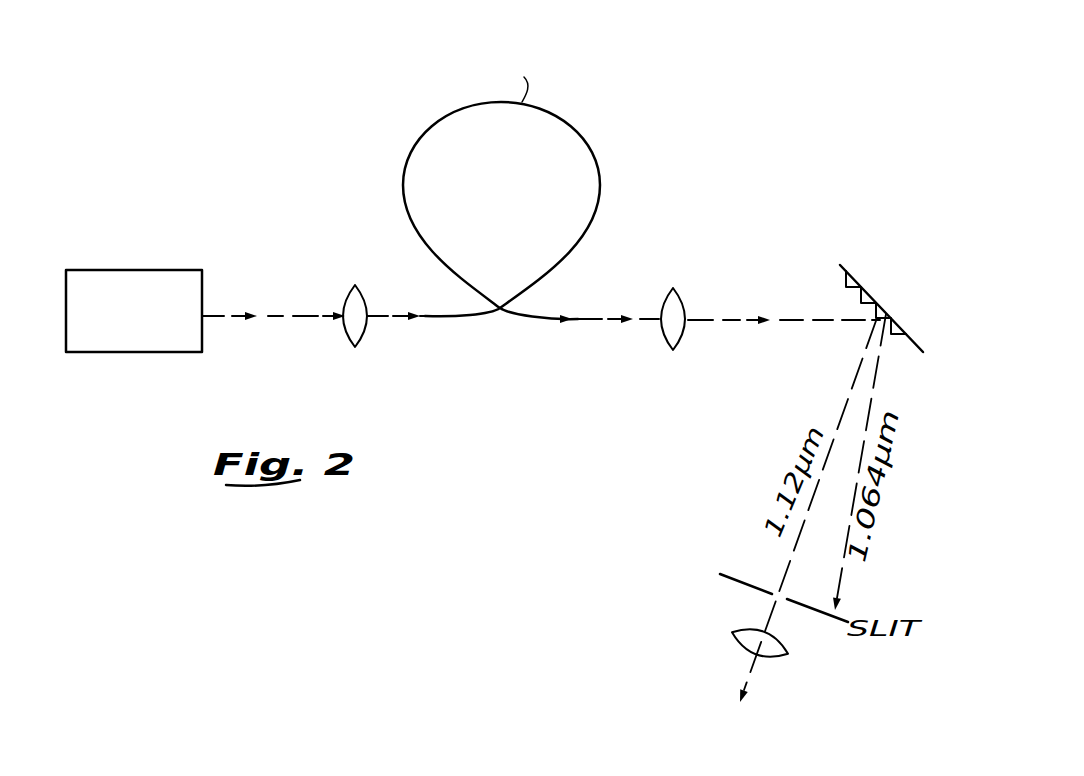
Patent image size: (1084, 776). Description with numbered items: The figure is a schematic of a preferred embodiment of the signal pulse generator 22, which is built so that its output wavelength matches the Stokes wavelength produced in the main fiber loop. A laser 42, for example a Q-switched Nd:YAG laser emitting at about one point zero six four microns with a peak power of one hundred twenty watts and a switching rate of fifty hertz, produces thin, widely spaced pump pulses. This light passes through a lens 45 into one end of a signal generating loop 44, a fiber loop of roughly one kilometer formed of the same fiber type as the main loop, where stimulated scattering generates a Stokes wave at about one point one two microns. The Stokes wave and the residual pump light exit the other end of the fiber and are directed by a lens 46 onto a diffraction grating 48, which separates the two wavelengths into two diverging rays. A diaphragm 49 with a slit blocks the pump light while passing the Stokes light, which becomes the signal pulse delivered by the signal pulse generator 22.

The signal pulse generator 22 is at (478, 378).
The laser 42 is at (170, 270).
The signal generating loop 44 is at (594, 157).
The lens 45 is at (347, 290).
The lens 46 is at (685, 306).
The diffraction grating 48 is at (885, 309).
The diaphragm 49 is at (738, 580).